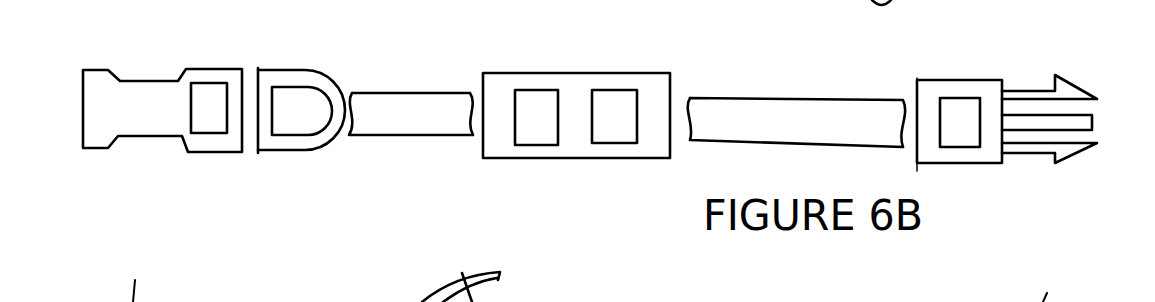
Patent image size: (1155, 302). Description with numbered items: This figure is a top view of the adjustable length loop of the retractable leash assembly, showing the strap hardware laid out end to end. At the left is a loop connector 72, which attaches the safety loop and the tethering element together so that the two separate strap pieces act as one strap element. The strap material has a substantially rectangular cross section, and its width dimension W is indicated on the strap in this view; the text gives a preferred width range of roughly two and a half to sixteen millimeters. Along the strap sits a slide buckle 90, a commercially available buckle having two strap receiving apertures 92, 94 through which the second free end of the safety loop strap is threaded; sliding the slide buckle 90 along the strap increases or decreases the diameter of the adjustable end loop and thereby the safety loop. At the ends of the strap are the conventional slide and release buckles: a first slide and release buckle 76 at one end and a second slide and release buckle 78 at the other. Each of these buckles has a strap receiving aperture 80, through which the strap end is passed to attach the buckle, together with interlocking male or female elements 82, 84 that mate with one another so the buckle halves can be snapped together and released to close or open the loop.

The interlocking female element 84 is at (120, 80).
The strap receiving aperture 80 is at (207, 117).
The second slide and release buckle 78 is at (149, 182).
The loop connector 72 is at (293, 80).
The slide buckle 90 is at (577, 147).
The strap receiving aperture 92 is at (535, 100).
The strap receiving aperture 94 is at (615, 105).
The width dimension W is at (747, 140).
The first slide and release buckle 76 is at (1023, 188).
The interlocking male element 82 is at (1072, 89).